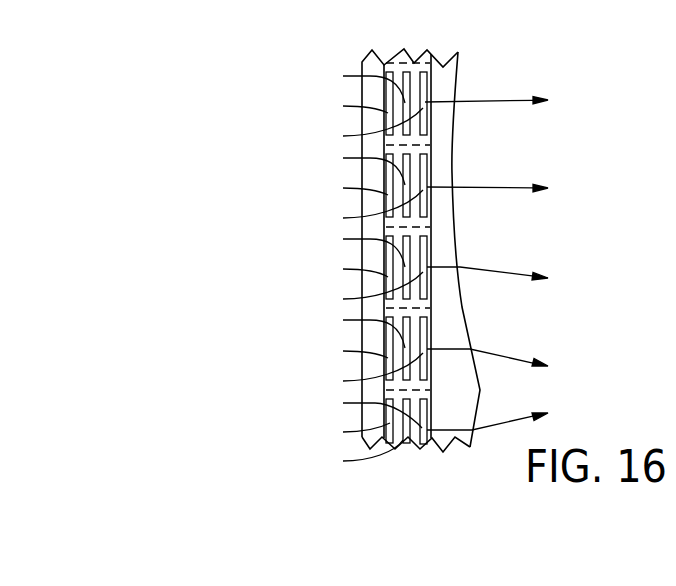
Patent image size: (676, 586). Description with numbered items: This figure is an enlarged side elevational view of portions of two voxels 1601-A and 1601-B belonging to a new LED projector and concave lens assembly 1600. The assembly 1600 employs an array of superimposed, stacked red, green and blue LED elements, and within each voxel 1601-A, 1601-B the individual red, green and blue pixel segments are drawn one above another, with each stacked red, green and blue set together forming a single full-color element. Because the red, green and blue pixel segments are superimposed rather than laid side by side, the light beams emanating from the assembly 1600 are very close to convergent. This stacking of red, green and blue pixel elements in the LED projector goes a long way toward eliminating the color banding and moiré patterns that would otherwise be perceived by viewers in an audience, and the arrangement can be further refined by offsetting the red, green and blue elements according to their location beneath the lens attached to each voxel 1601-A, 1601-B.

The LED projector and concave lens assembly 1600 is at (388, 244).
The voxel 1601-A is at (277, 50).
The voxel 1601-B is at (293, 391).